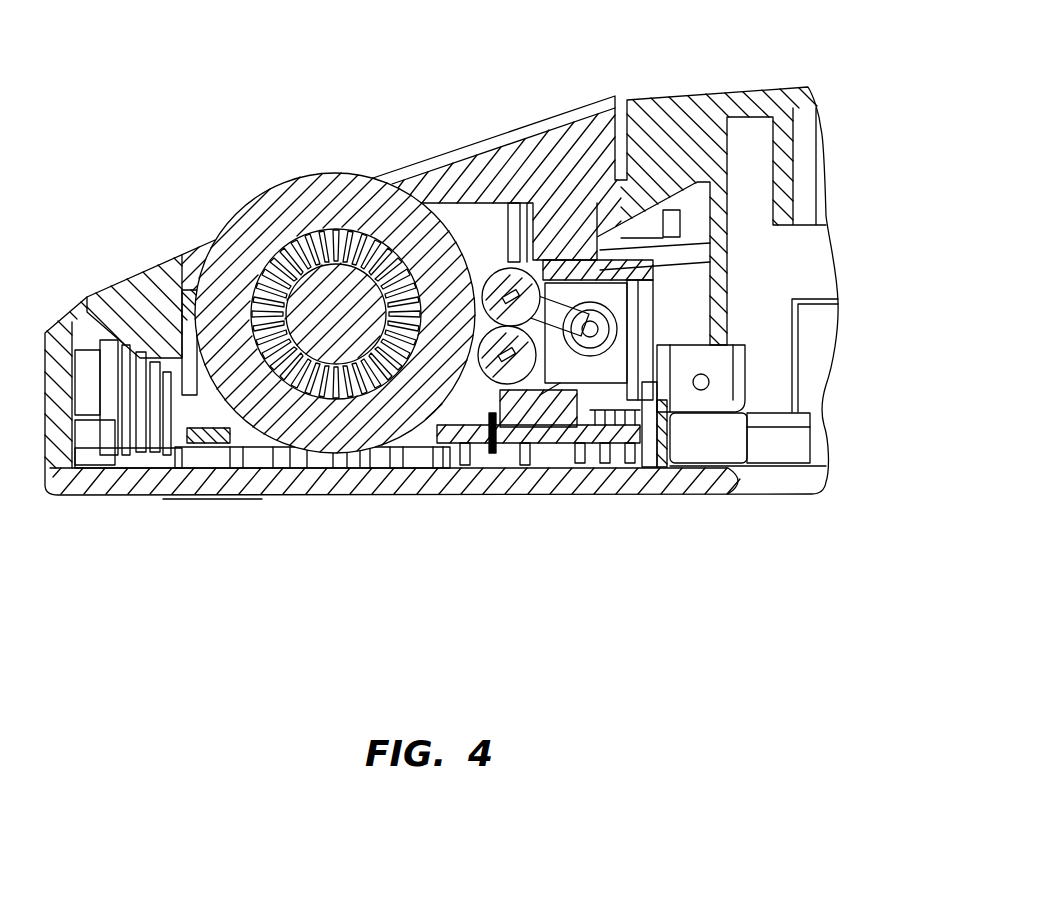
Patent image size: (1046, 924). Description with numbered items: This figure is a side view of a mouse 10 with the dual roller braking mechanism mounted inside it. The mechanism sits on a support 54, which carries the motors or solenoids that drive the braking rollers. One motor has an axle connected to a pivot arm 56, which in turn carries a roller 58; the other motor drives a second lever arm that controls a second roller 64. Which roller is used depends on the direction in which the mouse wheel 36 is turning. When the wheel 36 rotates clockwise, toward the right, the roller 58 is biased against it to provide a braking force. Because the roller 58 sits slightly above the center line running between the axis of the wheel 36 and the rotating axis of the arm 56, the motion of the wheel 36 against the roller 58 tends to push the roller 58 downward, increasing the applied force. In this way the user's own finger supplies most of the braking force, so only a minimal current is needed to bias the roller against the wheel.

The mouse 10 is at (715, 56).
The mouse wheel 36 is at (306, 176).
The support 54 is at (618, 302).
The pivot arm 56 is at (557, 345).
The roller 58 is at (507, 288).
The second roller 64 is at (478, 392).